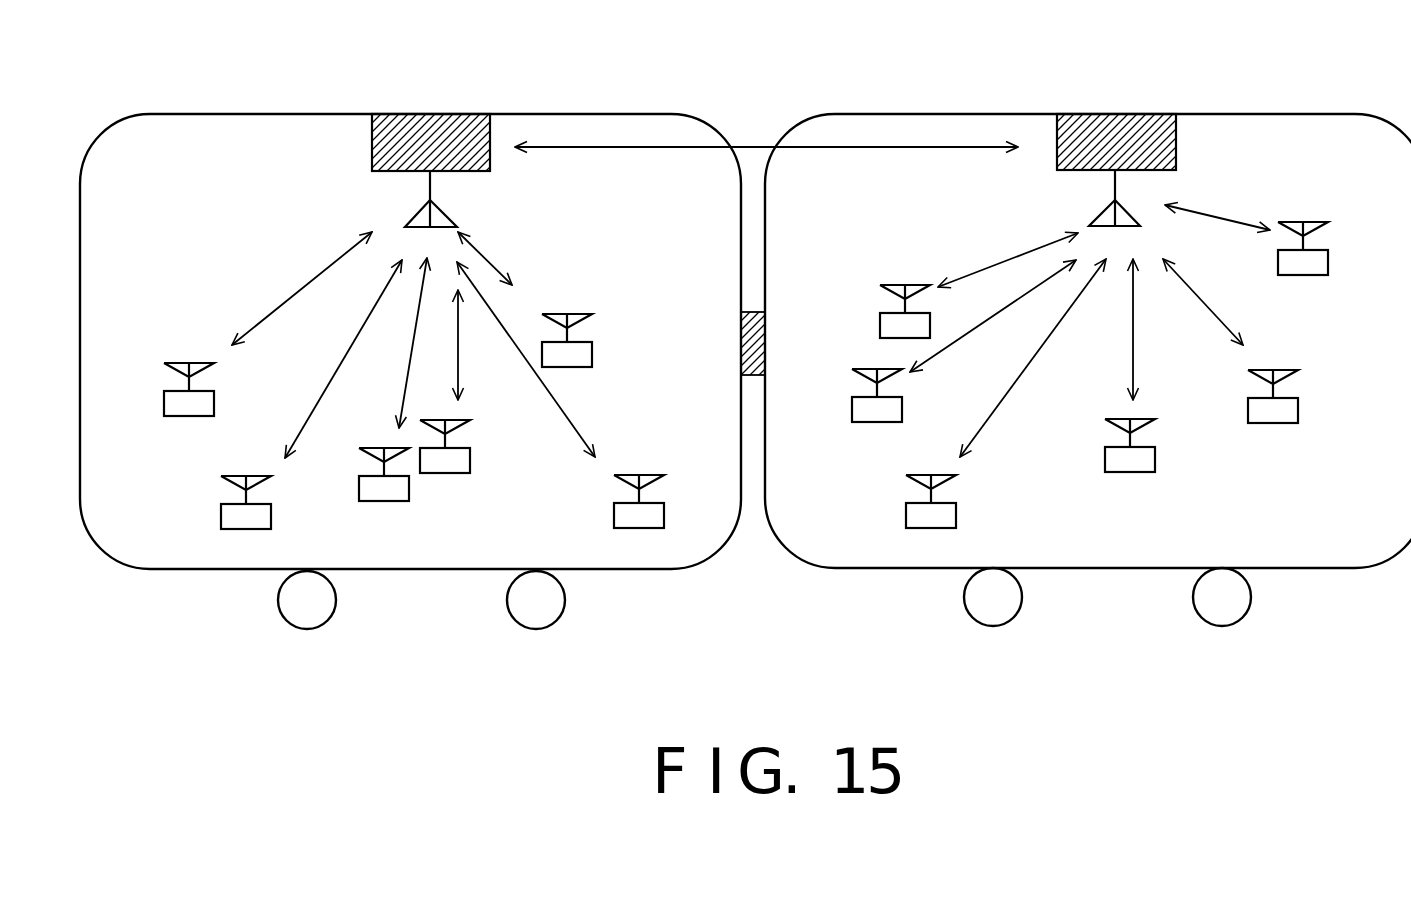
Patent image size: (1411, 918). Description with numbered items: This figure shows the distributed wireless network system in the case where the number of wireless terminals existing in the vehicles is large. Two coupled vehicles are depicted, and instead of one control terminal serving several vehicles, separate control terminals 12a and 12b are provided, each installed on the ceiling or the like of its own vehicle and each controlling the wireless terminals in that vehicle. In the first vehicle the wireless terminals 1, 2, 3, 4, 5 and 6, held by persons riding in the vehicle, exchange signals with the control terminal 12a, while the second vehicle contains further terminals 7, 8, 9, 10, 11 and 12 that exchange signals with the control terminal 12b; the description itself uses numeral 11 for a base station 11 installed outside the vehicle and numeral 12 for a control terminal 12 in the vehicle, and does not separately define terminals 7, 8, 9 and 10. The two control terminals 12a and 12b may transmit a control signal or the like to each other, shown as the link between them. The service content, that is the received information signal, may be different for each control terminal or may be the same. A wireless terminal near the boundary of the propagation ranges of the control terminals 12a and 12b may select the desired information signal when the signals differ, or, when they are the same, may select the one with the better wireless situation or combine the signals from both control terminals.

The wireless terminal 1 is at (178, 407).
The wireless terminal 2 is at (225, 513).
The wireless terminal 3 is at (388, 496).
The wireless terminal 4 is at (460, 464).
The wireless terminal 5 is at (625, 520).
The wireless terminal 6 is at (580, 357).
The wireless terminal device 7 is at (892, 326).
The wireless terminal device 8 is at (858, 410).
The wireless terminal device 9 is at (912, 514).
The wireless terminal device 10 is at (1150, 458).
The base station 11 is at (1287, 410).
The control terminal 12 is at (1320, 262).
The control terminal 12a is at (452, 137).
The control terminal 12b is at (1140, 137).